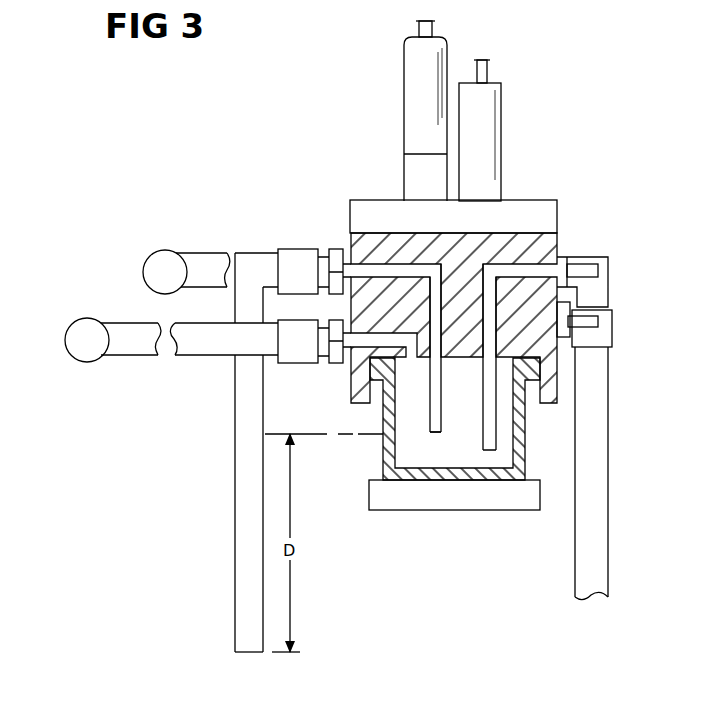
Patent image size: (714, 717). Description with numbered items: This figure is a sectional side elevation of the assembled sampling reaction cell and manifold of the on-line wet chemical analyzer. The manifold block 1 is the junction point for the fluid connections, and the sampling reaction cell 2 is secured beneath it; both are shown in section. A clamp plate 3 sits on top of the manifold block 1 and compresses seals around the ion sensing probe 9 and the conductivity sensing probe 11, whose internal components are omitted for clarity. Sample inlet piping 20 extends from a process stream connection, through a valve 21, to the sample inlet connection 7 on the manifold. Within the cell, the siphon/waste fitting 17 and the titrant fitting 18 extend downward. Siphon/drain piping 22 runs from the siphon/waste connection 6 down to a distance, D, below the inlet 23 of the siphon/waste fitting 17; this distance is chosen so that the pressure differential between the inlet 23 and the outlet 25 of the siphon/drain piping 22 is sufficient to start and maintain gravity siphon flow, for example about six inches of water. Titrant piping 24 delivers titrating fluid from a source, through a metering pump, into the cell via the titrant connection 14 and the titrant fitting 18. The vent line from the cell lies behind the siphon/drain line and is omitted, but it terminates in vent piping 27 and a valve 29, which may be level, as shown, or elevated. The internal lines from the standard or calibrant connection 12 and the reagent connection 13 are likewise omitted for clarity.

The manifold block 1 is at (349, 239).
The sampling reaction cell 2 is at (381, 446).
The clamp plate 3 is at (550, 199).
The siphon/waste connection 6 is at (295, 249).
The sample inlet connection 7 is at (313, 363).
The ion sensing probe 9 is at (401, 96).
The conductivity sensing probe 11 is at (503, 97).
The standard or calibrant connection 12 is at (592, 265).
The reagent connection 13 is at (597, 320).
The titrant connection 14 is at (612, 335).
The siphon/waste fitting 17 is at (429, 393).
The titrant fitting 18 is at (483, 392).
The sample inlet piping 20 is at (193, 355).
The valve 21 is at (85, 360).
The siphon/drain piping 22 is at (235, 508).
The inlet of siphon/drain fitting 23 is at (440, 432).
The titrant piping 24 is at (608, 503).
The outlet of siphon/drain piping 25 is at (248, 654).
The vent piping 27 is at (210, 252).
The valve 29 is at (155, 252).